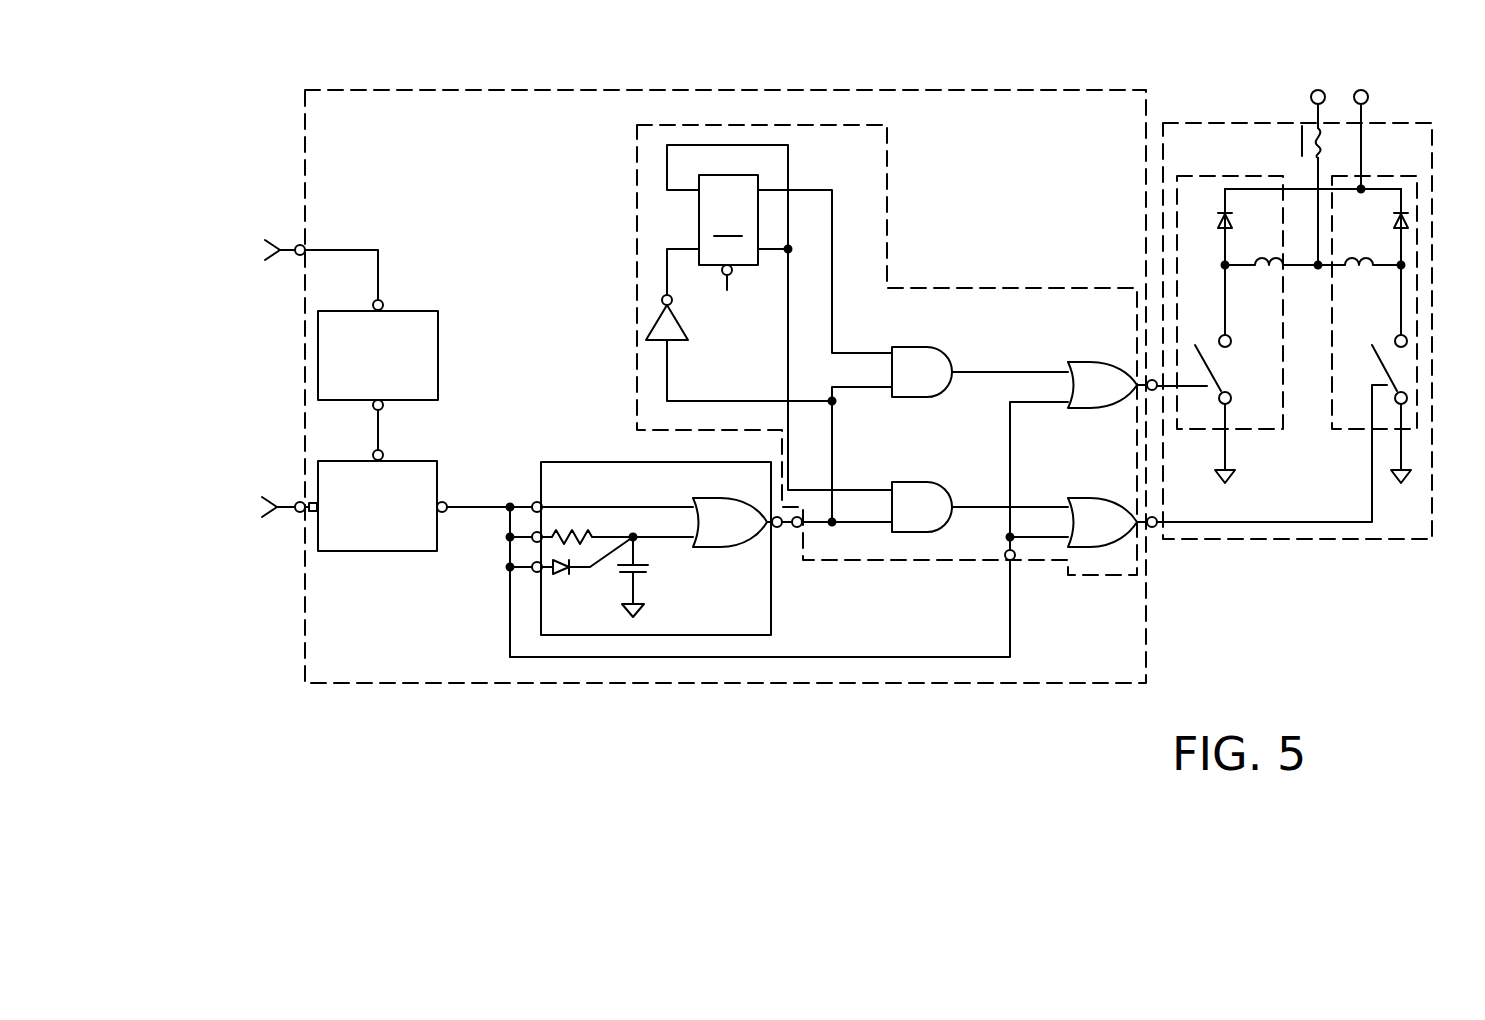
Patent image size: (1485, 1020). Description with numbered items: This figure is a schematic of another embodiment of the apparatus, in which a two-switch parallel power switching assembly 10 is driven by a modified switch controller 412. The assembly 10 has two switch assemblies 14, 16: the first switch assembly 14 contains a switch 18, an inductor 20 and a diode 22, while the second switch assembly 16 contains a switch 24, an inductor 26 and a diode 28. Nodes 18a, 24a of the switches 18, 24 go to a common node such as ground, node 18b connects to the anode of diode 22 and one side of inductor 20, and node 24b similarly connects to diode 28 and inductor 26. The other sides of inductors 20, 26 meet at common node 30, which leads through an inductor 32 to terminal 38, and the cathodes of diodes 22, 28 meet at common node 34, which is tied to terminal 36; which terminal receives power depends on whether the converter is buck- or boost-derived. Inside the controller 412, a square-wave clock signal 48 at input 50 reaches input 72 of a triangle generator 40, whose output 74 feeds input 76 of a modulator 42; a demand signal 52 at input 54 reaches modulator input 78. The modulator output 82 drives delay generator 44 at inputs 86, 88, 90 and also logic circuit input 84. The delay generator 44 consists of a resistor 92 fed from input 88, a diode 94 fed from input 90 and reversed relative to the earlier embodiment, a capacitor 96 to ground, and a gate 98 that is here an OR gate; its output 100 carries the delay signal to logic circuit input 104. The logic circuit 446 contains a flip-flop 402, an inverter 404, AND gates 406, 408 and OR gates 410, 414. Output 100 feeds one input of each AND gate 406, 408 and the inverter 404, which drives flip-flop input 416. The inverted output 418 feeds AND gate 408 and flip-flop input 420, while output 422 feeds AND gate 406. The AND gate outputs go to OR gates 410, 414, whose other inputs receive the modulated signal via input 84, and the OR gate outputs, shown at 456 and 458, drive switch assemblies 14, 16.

The two-switch parallel power switching assembly 10 is at (1203, 123).
The switch assembly 14 is at (1177, 176).
The switch assembly 16 is at (1417, 176).
The switch 18 is at (1233, 375).
The node 18a is at (1231, 403).
The node 18b is at (1219, 339).
The inductor 20 is at (1268, 262).
The diode 22 is at (1220, 228).
The switch 24 is at (1406, 373).
The node 24a is at (1407, 398).
The node 24b is at (1407, 340).
The inductor 26 is at (1358, 262).
The diode 28 is at (1405, 222).
The common node 30 is at (1318, 280).
The inductor 32 is at (1300, 142).
The common node 34 is at (1364, 189).
The terminal 36 is at (1361, 90).
The terminal 38 is at (1318, 90).
The triangle generator 40 is at (440, 370).
The modulator 42 is at (378, 555).
The delay generator 44 is at (673, 638).
The clock signal 48 is at (225, 230).
The input 50 is at (300, 256).
The demand signal 52 is at (248, 552).
The input 54 is at (297, 503).
The input 72 is at (383, 303).
The output 74 is at (383, 408).
The input 76 is at (383, 455).
The input 78 is at (314, 512).
The output 82 is at (445, 503).
The input 84 is at (1015, 558).
The input 86 is at (535, 503).
The input 88 is at (532, 540).
The input 90 is at (532, 570).
The resistor 92 is at (575, 535).
The diode 94 is at (570, 570).
The capacitor 96 is at (648, 568).
The OR gate 98 is at (722, 540).
The output 100 is at (778, 528).
The input 104 is at (798, 528).
The flip-flop 402 is at (728, 232).
The inverter 404 is at (680, 325).
The AND gate 406 is at (905, 360).
The AND gate 408 is at (915, 492).
The OR gate 410 is at (1090, 378).
The switch controller 412 is at (1048, 90).
The OR gate 414 is at (1090, 512).
The input 416 is at (667, 249).
The inverted output 418 is at (808, 249).
The input 420 is at (667, 190).
The output 422 is at (805, 190).
The logic circuit 446 is at (1000, 288).
The first control output 456 is at (1155, 392).
The second control output 458 is at (1157, 527).